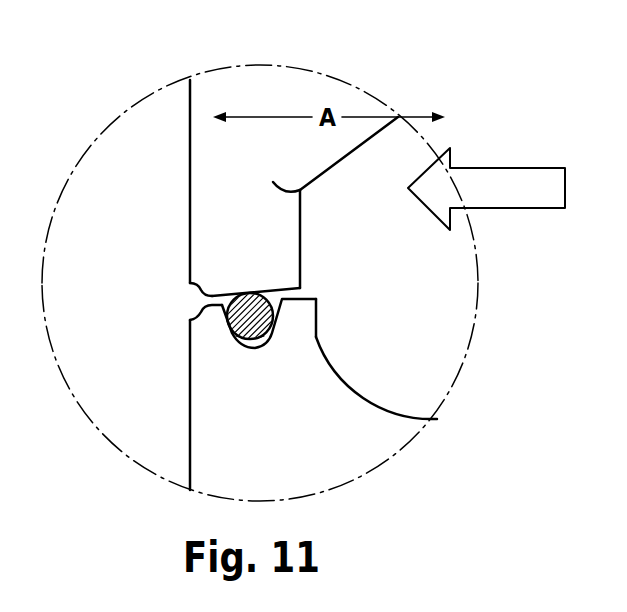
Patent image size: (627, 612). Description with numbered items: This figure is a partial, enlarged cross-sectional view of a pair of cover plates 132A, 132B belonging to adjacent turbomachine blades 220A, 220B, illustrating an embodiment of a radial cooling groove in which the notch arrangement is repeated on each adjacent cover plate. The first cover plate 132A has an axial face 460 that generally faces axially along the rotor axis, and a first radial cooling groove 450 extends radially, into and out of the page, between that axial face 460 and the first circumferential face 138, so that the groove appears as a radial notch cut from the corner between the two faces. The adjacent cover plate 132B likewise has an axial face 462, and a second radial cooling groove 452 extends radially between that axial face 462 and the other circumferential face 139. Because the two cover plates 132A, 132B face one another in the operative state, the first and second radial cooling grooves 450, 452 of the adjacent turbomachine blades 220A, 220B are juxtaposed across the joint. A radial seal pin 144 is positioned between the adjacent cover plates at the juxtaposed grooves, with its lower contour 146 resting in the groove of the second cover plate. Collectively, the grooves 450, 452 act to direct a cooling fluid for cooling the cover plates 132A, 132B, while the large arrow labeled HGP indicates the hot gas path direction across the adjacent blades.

The cover plate 132A is at (302, 190).
The cover plate 132B is at (377, 447).
The first circumferential face 138 is at (222, 293).
The second circumferential face 139 is at (207, 313).
The radial seal pin 144 is at (262, 318).
The seal member bottom surface 146 is at (250, 340).
The turbomachine blade 220A is at (352, 97).
The turbomachine blade 220B is at (320, 463).
The radial cooling groove 450 is at (196, 290).
The second radial cooling groove 452 is at (198, 312).
The axial face 460 is at (190, 198).
The axial face 462 is at (190, 405).
The hot gas path flow direction HGP is at (515, 190).